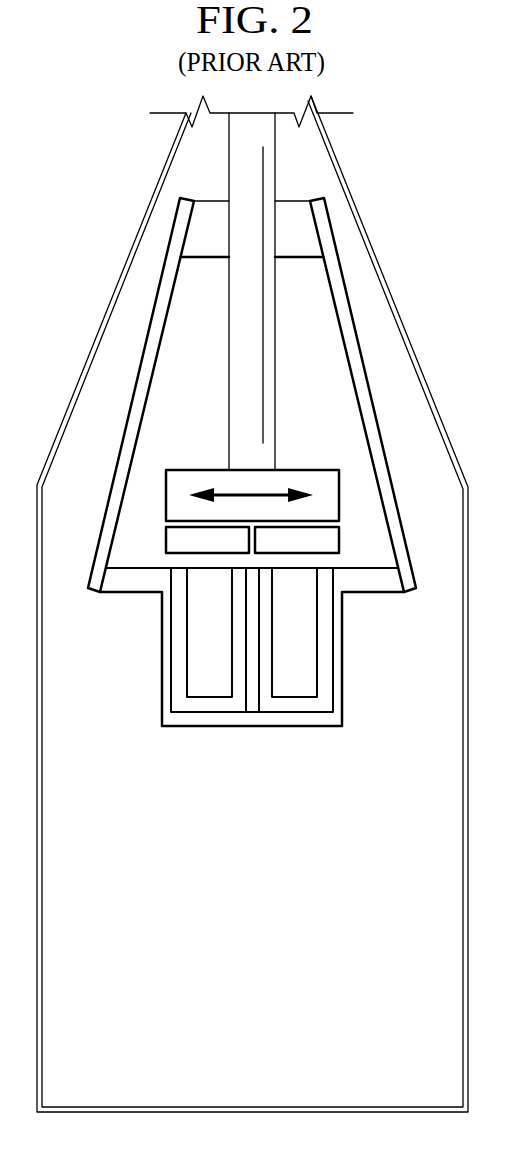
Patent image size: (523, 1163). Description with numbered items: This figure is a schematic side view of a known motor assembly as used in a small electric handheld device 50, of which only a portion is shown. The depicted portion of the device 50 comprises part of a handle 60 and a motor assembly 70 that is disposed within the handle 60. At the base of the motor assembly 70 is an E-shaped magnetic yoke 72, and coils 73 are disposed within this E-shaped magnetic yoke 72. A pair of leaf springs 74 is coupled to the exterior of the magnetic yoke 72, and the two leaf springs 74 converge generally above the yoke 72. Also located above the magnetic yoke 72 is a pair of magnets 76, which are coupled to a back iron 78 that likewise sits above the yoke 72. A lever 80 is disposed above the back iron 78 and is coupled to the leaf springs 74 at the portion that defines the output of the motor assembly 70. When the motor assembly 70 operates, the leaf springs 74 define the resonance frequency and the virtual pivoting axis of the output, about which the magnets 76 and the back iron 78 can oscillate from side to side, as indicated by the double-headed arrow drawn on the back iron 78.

The electric handheld device 50 is at (72, 113).
The handle 60 is at (61, 316).
The motor assembly 70 is at (233, 678).
The E-shaped magnetic yoke 72 is at (202, 727).
The coils 73 is at (318, 662).
The leaf springs 74 is at (134, 402).
The magnets 76 is at (167, 540).
The back iron 78 is at (198, 468).
The lever 80 is at (277, 423).